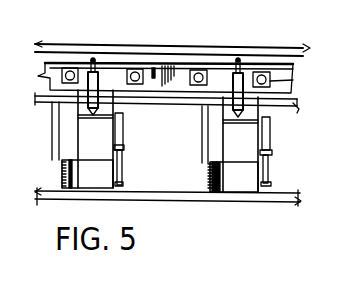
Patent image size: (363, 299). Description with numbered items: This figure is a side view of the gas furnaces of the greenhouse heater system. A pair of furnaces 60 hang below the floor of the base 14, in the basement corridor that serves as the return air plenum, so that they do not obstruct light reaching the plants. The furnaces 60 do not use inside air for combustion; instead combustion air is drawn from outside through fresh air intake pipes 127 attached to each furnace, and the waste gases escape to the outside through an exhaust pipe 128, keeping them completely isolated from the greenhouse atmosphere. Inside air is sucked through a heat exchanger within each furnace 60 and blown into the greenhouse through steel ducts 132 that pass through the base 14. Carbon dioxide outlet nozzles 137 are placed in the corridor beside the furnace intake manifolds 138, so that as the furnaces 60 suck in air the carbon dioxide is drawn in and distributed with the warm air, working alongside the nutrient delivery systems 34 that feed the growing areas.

The base 14 is at (242, 50).
The exhaust pipe 128 is at (189, 62).
The steel ducts 132 is at (287, 84).
The fresh air intake pipes 127 is at (36, 94).
The nutrient delivery systems 34 is at (295, 108).
The furnaces 60 is at (103, 142).
The carbon dioxide outlet nozzles 137 is at (59, 150).
The furnace intake manifolds 138 is at (62, 170).